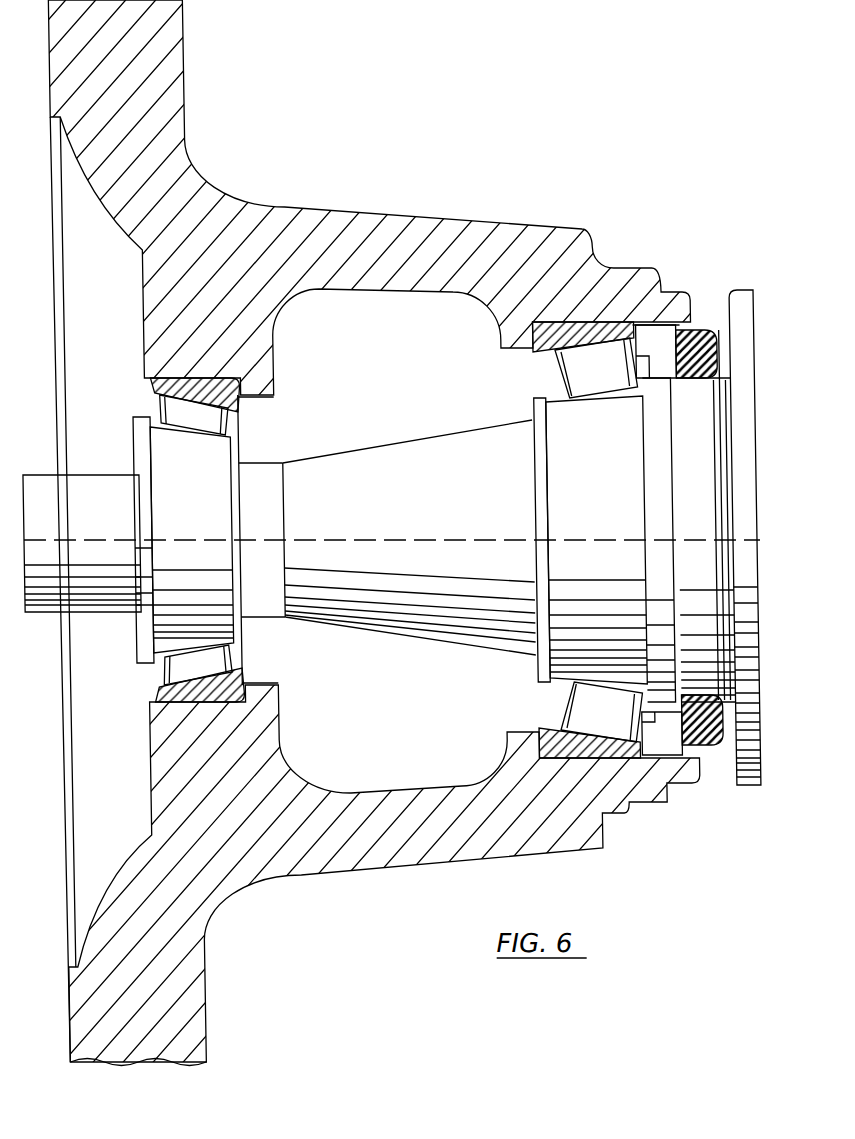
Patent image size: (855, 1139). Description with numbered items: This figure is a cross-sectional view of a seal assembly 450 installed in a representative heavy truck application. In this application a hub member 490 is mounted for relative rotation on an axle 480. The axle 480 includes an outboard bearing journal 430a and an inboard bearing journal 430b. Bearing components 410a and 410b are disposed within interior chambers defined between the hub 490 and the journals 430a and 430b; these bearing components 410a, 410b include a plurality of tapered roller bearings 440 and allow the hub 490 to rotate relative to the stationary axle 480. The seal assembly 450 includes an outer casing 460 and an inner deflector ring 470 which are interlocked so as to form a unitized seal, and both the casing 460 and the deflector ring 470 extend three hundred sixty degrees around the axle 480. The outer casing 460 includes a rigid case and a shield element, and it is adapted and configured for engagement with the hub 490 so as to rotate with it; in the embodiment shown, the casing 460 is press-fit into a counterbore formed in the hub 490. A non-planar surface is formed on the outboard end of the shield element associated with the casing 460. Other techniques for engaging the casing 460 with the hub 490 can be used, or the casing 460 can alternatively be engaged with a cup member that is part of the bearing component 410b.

The bearing component 410a is at (245, 383).
The bearing component 410b is at (533, 355).
The outboard bearing journal 430a is at (205, 486).
The inboard bearing journal 430b is at (531, 442).
The tapered roller bearings 440 is at (401, 540).
The seal assembly 450 is at (704, 307).
The outer casing 460 is at (662, 754).
The inner deflector ring 470 is at (713, 750).
The axle 480 is at (424, 521).
The hub member 490 is at (337, 224).